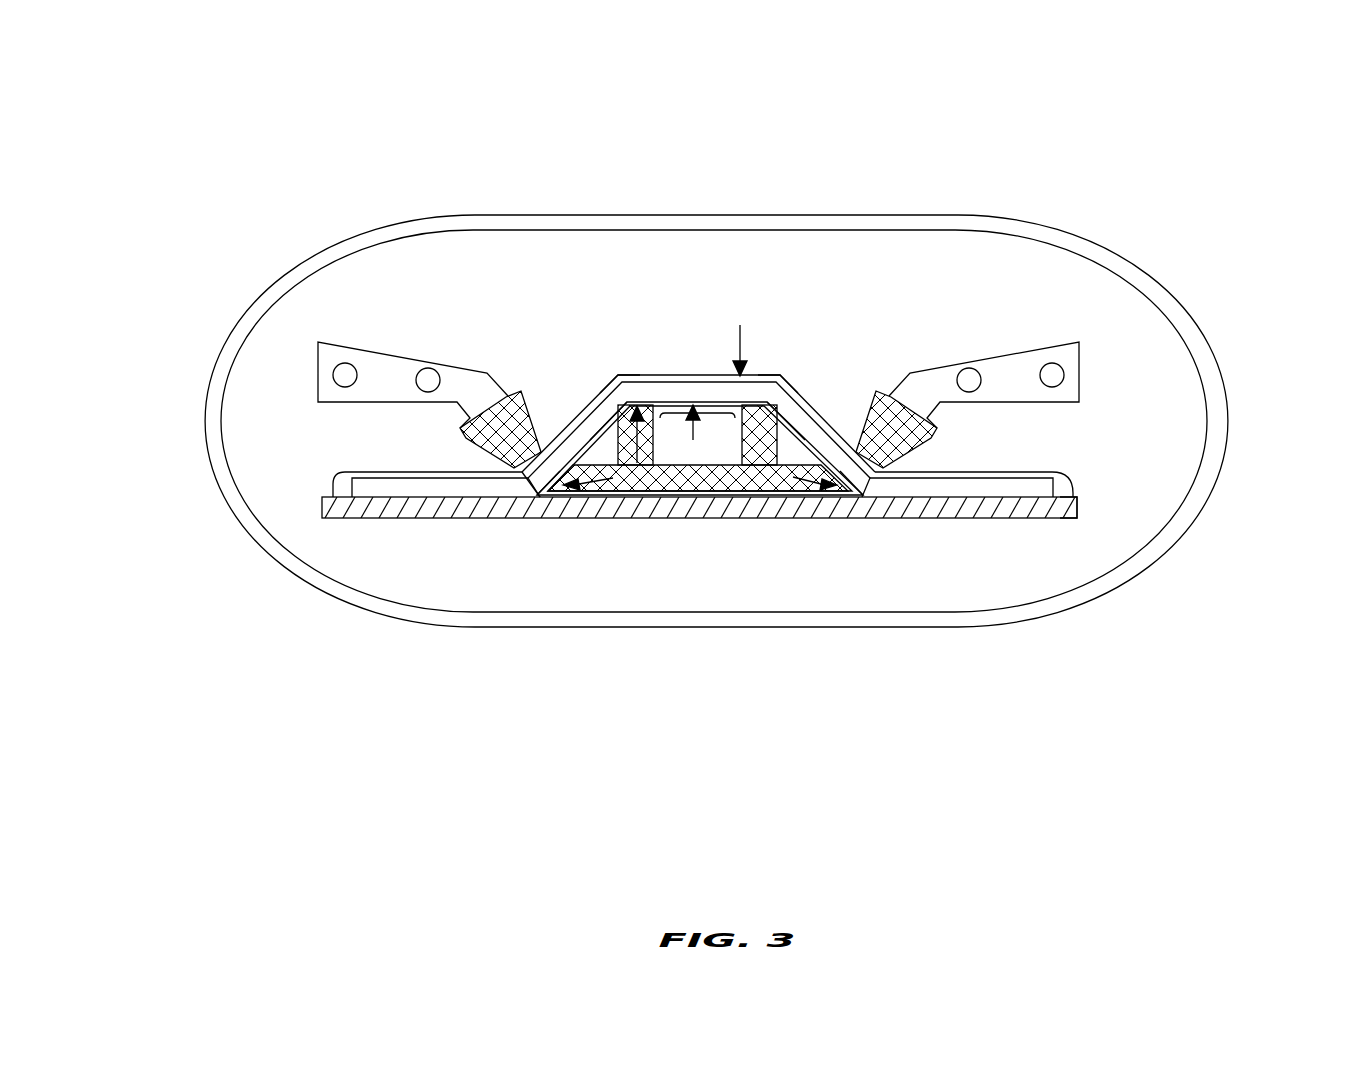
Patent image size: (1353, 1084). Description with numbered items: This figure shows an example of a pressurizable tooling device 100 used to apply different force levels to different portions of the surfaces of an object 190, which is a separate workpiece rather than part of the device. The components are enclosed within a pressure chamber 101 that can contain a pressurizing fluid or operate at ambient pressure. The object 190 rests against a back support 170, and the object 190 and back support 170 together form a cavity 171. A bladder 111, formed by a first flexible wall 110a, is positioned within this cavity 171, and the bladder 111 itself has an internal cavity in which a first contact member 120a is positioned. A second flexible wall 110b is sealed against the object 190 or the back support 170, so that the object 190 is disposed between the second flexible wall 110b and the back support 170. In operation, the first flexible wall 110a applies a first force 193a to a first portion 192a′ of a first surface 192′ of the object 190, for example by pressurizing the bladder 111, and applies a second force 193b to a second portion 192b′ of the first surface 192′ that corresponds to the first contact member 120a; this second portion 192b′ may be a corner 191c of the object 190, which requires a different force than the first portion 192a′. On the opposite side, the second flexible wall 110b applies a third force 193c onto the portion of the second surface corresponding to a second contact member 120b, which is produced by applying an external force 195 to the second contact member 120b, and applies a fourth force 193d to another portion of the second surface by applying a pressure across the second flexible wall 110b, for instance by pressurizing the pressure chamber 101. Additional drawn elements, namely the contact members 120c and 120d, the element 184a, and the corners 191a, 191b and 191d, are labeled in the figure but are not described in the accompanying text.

The pressurizable tooling device 100 is at (758, 382).
The pressure chamber 101 is at (1147, 278).
The external force 195 is at (347, 243).
The back support 170 is at (325, 506).
The cavity 171 is at (727, 437).
The first flexible wall 110a is at (678, 402).
The second flexible wall 110b is at (368, 472).
The bladder 111 is at (716, 385).
The first contact member 120a is at (642, 464).
The second contact member 120b is at (415, 343).
The right support pillar 120c is at (775, 464).
The right wedge pad 120d is at (895, 379).
The mounting bracket 184a is at (387, 388).
The object 190 is at (985, 488).
The frame bottom-right corner 191a is at (866, 487).
The frame bottom-left corner 191b is at (545, 495).
The corner 191c is at (618, 378).
The cover top-right corner 191d is at (781, 377).
The first surface 192′ is at (1043, 505).
The first portion 192a′ is at (708, 418).
The second portion 192b′ is at (634, 400).
The first force 193a is at (693, 440).
The second force 193b is at (637, 463).
The third force 193c is at (478, 447).
The fourth force 193d is at (740, 325).